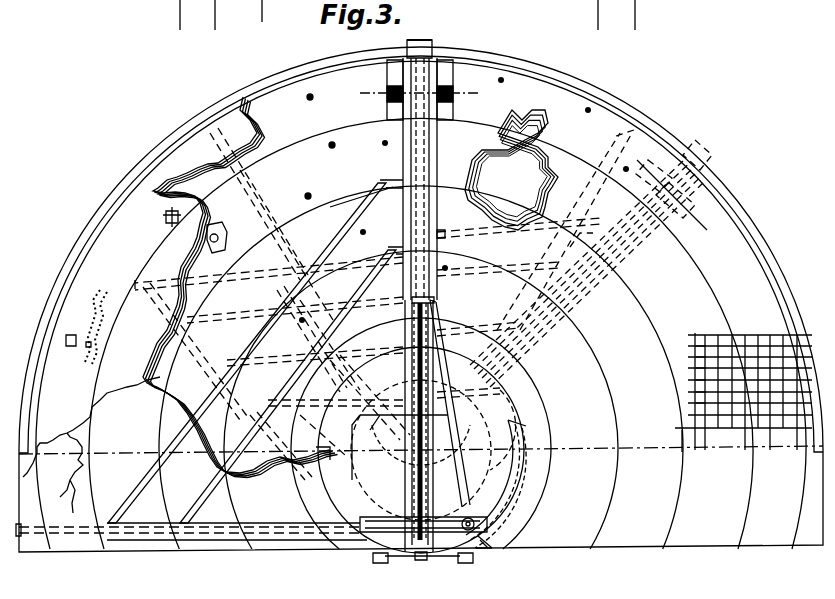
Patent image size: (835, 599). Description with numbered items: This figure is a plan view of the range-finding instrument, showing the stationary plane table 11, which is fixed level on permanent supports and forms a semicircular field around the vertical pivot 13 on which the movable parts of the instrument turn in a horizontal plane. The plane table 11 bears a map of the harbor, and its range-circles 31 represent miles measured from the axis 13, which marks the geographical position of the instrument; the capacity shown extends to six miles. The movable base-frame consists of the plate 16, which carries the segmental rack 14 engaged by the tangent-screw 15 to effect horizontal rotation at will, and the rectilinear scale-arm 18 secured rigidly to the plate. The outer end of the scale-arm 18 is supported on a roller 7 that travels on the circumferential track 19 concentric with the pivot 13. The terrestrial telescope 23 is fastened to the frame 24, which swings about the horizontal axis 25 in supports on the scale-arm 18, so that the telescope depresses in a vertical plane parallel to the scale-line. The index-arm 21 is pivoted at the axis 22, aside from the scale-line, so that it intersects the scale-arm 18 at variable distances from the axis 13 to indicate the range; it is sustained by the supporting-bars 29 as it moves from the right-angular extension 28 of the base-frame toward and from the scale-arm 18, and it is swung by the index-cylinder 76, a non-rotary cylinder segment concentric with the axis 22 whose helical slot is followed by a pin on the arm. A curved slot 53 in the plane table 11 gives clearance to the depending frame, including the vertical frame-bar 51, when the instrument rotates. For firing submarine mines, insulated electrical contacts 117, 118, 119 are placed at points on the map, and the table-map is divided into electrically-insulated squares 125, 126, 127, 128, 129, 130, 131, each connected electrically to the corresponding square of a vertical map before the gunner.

The roller 7 is at (424, 42).
The stationary plane table 11 is at (421, 309).
The vertical pivot 13 is at (408, 440).
The segmental rack 14 is at (522, 487).
The tangent-screw 15 is at (430, 558).
The plate 16 is at (421, 450).
The scale-arm 18 is at (407, 214).
The circumferential track 19 is at (497, 60).
The index-arm 21 is at (376, 128).
The axis of index-arm 22 is at (488, 542).
The terrestrial telescope 23 is at (410, 347).
The telescope frame 24 is at (403, 240).
The horizontal axis 25 is at (395, 92).
The right-angular extension of the movable base-frame 28 is at (193, 548).
The supporting-bars 29 is at (252, 353).
The range-circles 31 is at (435, 339).
The vertical frame-bar 51 is at (421, 400).
The curved slot 53 is at (421, 433).
The index-cylinder 76 is at (481, 531).
The insulated electrical contact 117 is at (317, 107).
The insulated electrical contact 118 is at (325, 154).
The insulated electrical contact 119 is at (297, 205).
The electrically-insulated square 125 is at (696, 344).
The electrically-insulated square 126 is at (696, 356).
The electrically-insulated square 127 is at (696, 368).
The electrically-insulated square 128 is at (696, 379).
The electrically-insulated square 129 is at (696, 391).
The electrically-insulated square 130 is at (696, 403).
The electrically-insulated square 131 is at (696, 415).